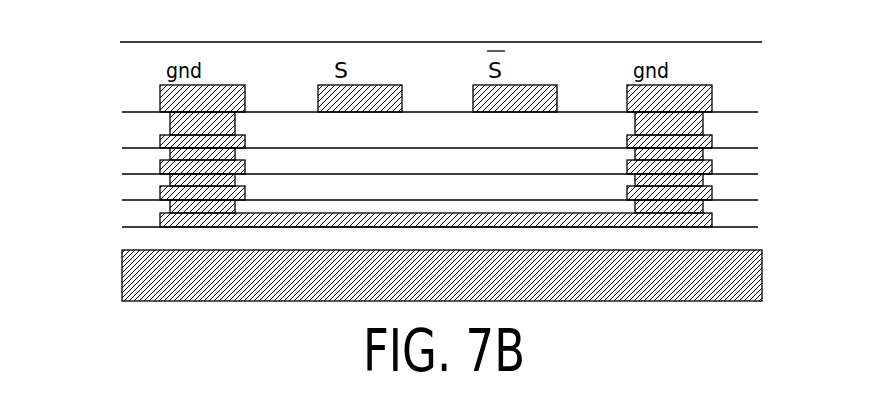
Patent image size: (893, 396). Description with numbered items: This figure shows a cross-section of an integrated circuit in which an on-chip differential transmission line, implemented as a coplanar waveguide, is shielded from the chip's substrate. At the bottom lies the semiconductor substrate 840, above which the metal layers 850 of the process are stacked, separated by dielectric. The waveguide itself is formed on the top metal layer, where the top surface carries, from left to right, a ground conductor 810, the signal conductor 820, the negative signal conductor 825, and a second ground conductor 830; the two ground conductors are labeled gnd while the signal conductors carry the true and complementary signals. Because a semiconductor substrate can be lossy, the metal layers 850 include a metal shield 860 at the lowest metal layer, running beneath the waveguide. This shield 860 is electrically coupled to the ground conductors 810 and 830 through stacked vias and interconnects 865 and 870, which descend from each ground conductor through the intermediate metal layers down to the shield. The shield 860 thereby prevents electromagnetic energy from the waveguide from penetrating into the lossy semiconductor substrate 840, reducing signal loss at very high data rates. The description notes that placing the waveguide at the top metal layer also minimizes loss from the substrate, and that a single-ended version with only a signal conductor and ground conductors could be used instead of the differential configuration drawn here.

The ground conductor 810 is at (229, 85).
The signal conductor 820 is at (378, 85).
The negative signal conductor 825 is at (544, 85).
The ground conductor 830 is at (698, 85).
The semiconductor substrate 840 is at (462, 288).
The metal layers 850 is at (117, 143).
The metal shield 860 is at (712, 222).
The vias and interconnects 865 is at (170, 130).
The vias and interconnects 870 is at (703, 122).